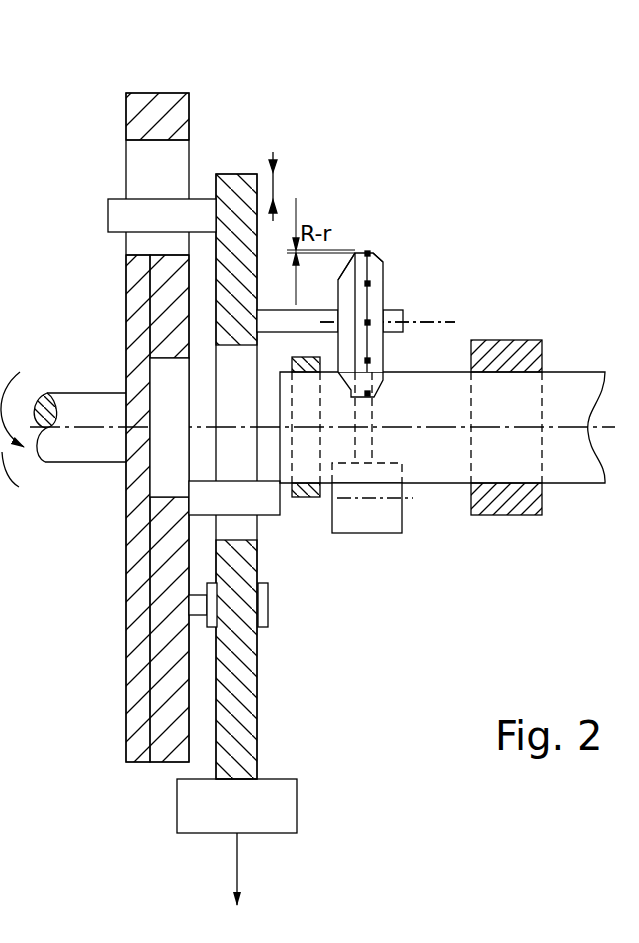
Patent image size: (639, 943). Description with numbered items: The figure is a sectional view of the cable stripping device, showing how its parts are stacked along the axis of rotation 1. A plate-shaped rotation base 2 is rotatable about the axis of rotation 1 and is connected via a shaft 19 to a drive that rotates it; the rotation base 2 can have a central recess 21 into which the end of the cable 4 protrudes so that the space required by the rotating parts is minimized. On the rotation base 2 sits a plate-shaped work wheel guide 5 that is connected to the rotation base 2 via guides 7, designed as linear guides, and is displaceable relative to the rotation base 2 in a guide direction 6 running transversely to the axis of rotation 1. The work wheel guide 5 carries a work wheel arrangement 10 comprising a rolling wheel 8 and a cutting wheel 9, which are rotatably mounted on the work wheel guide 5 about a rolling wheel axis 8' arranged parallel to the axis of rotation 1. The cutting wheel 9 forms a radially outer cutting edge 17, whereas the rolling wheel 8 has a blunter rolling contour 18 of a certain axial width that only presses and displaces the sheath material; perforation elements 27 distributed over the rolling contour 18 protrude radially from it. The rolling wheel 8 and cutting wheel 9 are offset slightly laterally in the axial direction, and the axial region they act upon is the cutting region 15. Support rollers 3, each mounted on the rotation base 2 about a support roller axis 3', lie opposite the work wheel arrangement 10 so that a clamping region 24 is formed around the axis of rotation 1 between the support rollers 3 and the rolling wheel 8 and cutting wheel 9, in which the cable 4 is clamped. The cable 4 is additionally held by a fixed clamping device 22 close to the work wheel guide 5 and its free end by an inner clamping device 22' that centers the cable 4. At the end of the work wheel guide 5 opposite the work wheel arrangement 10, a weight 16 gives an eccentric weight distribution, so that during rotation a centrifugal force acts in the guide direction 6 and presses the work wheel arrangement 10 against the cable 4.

The axis of rotation 1 is at (530, 428).
The rotation base 2 is at (160, 120).
The support roller 3 is at (393, 535).
The support roller axis 3' is at (418, 553).
The cable 4 is at (572, 395).
The work wheel guide 5 is at (232, 732).
The guide direction 6 is at (278, 182).
The guide 7 is at (203, 188).
The rolling wheel 8 is at (354, 306).
The rolling wheel axis 8' is at (451, 275).
The cutting wheel 9 is at (399, 307).
The work wheel arrangement 10 is at (398, 245).
The cutting region 15 is at (363, 442).
The weight 16 is at (262, 795).
The cutting edge 17 is at (355, 251).
The rolling contour 18 is at (380, 255).
The shaft 19 is at (83, 410).
The central recess 21 is at (148, 513).
The clamping device 22 is at (515, 393).
The inner clamping device 22' is at (324, 482).
The clamping region 24 is at (380, 436).
The perforation elements 27 is at (367, 248).